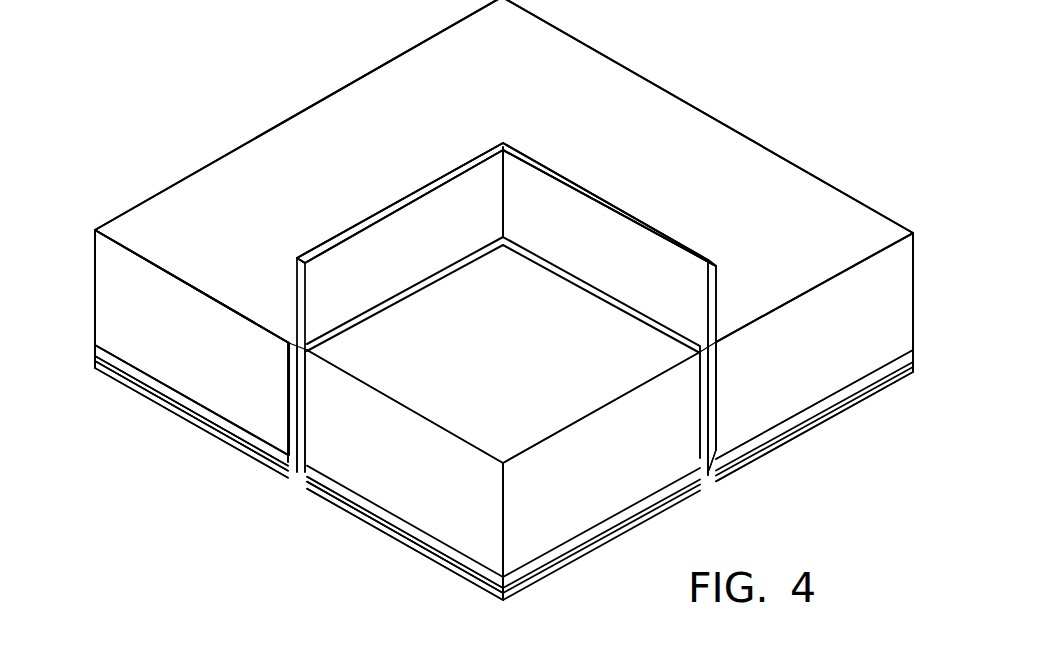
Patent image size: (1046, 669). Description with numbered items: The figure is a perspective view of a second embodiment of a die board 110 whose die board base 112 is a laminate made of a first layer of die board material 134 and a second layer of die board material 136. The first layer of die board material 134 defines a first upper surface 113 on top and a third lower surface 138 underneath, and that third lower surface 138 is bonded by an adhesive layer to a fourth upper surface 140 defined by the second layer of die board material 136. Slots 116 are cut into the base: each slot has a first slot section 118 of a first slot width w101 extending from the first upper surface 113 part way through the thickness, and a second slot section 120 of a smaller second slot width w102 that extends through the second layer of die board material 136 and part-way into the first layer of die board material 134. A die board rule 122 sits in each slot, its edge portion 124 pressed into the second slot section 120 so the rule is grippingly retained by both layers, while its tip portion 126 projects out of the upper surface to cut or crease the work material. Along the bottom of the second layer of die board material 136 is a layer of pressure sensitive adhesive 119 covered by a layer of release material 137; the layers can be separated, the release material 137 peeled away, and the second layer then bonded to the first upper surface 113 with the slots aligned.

The die board 110 is at (727, 100).
The die board base 112 is at (398, 100).
The first upper surface 113 is at (589, 131).
The slots 116 is at (283, 394).
The first slot section 118 is at (306, 394).
The layer of pressure sensitive adhesive 119 is at (370, 519).
The second slot section 120 is at (287, 462).
The die board rules 122 is at (525, 185).
The edge portion 124 is at (305, 433).
The tip portion 126 is at (341, 233).
The first layer of die board material 134 is at (192, 327).
The second layer of die board material 136 is at (167, 393).
The layer of release material 137 is at (423, 551).
The third lower surface 138 is at (145, 371).
The fourth upper surface 140 is at (197, 404).
The first slot width w101 is at (728, 358).
The second slot width w102 is at (696, 477).